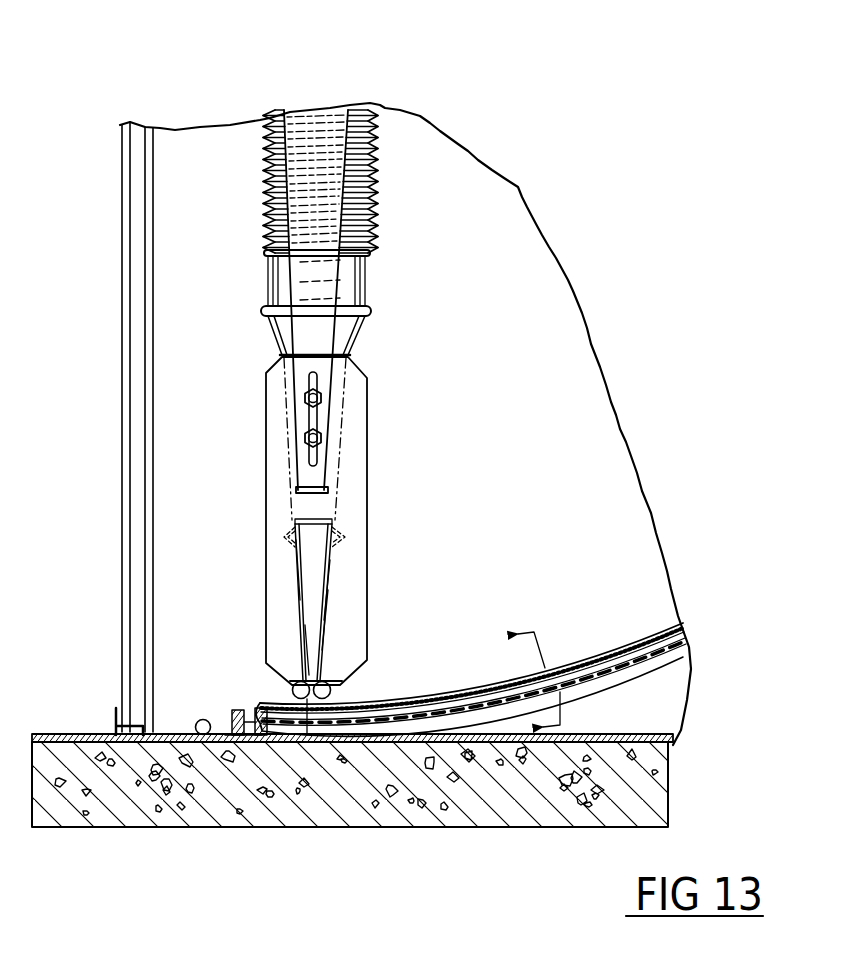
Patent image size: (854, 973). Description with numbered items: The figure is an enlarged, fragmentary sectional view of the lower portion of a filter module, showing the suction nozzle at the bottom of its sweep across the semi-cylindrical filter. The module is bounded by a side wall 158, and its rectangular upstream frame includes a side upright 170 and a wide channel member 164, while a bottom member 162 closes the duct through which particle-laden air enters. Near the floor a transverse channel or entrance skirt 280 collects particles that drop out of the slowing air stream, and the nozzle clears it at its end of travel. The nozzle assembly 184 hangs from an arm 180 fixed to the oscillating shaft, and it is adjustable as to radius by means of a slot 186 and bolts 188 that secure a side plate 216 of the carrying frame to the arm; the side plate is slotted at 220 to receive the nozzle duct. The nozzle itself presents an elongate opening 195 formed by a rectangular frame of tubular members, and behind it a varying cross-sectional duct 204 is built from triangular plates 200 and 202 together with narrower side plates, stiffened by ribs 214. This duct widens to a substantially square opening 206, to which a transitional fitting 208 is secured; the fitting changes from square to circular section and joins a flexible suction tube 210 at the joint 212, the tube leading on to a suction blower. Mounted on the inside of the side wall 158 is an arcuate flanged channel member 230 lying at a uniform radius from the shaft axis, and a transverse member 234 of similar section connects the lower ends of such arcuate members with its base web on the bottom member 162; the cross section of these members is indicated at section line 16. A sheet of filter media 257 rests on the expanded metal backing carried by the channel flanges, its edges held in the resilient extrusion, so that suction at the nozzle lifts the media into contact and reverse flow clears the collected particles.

The side wall 158 is at (522, 414).
The side upright 170 is at (135, 463).
The entrance skirt 280 is at (175, 733).
The flexible suction tube 210 is at (362, 200).
The arm 180 is at (325, 292).
The joint 212 is at (355, 316).
The transitional fitting 208 is at (362, 336).
The square opening 206 is at (352, 357).
The nozzle assembly 184 is at (370, 478).
The slot 186 is at (313, 420).
The bolt 188 is at (311, 430).
The stiffness rib 214 is at (346, 534).
The side plate 216 is at (352, 570).
The triangular plate 200 is at (297, 582).
The triangular plate 202 is at (330, 596).
The slot 220 is at (328, 618).
The duct 204 is at (312, 642).
The elongate opening 195 is at (307, 760).
The arcuate flanged channel member 230 is at (628, 673).
The filter media 257 is at (557, 670).
The section line 16- 16 is at (526, 684).
The bottom member 162 is at (590, 744).
The wide channel member 164 is at (210, 735).
The transverse member 234 is at (265, 737).